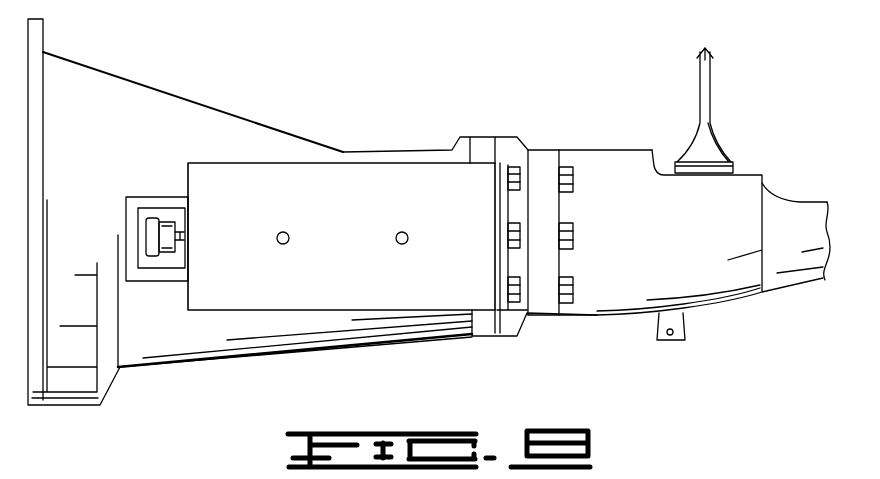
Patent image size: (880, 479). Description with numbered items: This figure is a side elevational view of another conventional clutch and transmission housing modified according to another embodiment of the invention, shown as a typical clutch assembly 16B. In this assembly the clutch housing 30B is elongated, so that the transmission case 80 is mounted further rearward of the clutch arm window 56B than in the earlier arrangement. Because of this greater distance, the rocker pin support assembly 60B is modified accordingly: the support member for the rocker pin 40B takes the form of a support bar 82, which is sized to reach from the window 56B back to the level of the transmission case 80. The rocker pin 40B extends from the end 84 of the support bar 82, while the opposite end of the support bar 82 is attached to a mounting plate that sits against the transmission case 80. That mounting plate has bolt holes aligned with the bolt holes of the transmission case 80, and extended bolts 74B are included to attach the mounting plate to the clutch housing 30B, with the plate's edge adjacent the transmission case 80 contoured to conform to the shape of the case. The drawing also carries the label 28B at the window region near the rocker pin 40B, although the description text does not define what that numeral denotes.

The clutch assembly 16B is at (448, 128).
The fastener 28B is at (157, 209).
The clutch housing 30B is at (190, 101).
The rocker pin 40B is at (182, 268).
The clutch arm window 56B is at (135, 196).
The rocker pin support assembly 60B is at (343, 158).
The extended bolts 74B is at (510, 166).
The transmission case 80 is at (585, 150).
The support bar 82 is at (457, 292).
The end of the support bar 84 is at (227, 162).